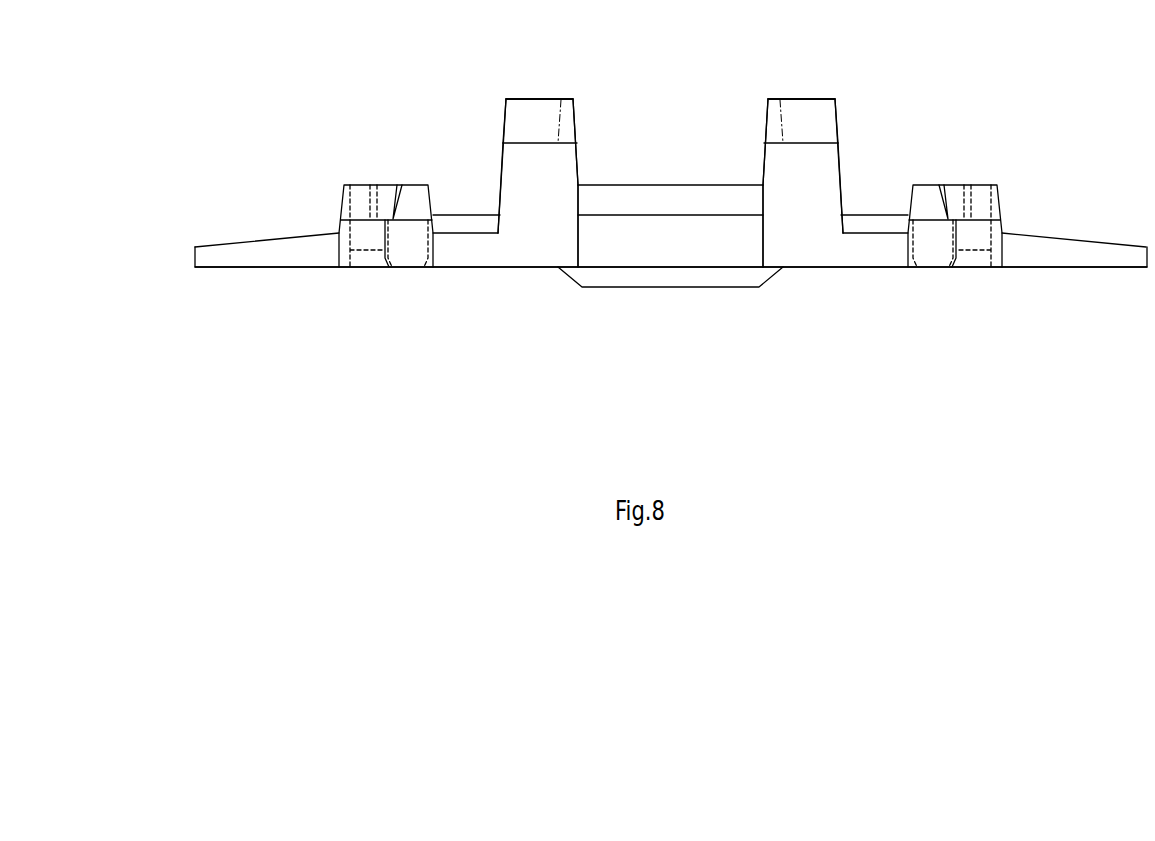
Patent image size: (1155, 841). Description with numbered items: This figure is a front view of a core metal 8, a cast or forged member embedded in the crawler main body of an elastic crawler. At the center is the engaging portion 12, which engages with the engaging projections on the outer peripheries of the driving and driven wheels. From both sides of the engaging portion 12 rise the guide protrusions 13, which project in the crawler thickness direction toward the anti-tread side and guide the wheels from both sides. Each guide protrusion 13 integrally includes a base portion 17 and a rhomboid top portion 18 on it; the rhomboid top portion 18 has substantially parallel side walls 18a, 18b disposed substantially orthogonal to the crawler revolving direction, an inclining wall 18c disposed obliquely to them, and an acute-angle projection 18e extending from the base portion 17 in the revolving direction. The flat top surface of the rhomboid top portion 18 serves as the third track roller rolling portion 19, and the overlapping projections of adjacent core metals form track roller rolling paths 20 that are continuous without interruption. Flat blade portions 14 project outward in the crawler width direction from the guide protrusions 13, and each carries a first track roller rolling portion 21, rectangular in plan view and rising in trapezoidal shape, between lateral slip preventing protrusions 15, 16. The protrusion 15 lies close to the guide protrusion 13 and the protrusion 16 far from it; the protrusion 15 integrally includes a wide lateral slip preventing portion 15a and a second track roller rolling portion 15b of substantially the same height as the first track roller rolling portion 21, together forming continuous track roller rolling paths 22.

The core metal 8 is at (258, 220).
The engaging portion 12 is at (668, 228).
The guide protrusion 13 is at (581, 166).
The blade portion 14 is at (243, 253).
The lateral slip preventing protrusion 15 is at (433, 243).
The lateral slip preventing portion 15a is at (408, 244).
The second track roller rolling portion 15b is at (414, 202).
The lateral slip preventing protrusion 16 is at (340, 226).
The base portion 17 is at (530, 183).
The rhomboid top portion 18 is at (519, 97).
The side wall 18a is at (575, 113).
The side wall 18b is at (527, 123).
The inclining wall 18c is at (506, 128).
The projection 18e is at (563, 123).
The third track roller rolling portion 19 is at (545, 98).
The track roller rolling path 20 is at (533, 97).
The first track roller rolling portion 21 is at (383, 183).
The track roller rolling path 22 is at (413, 183).